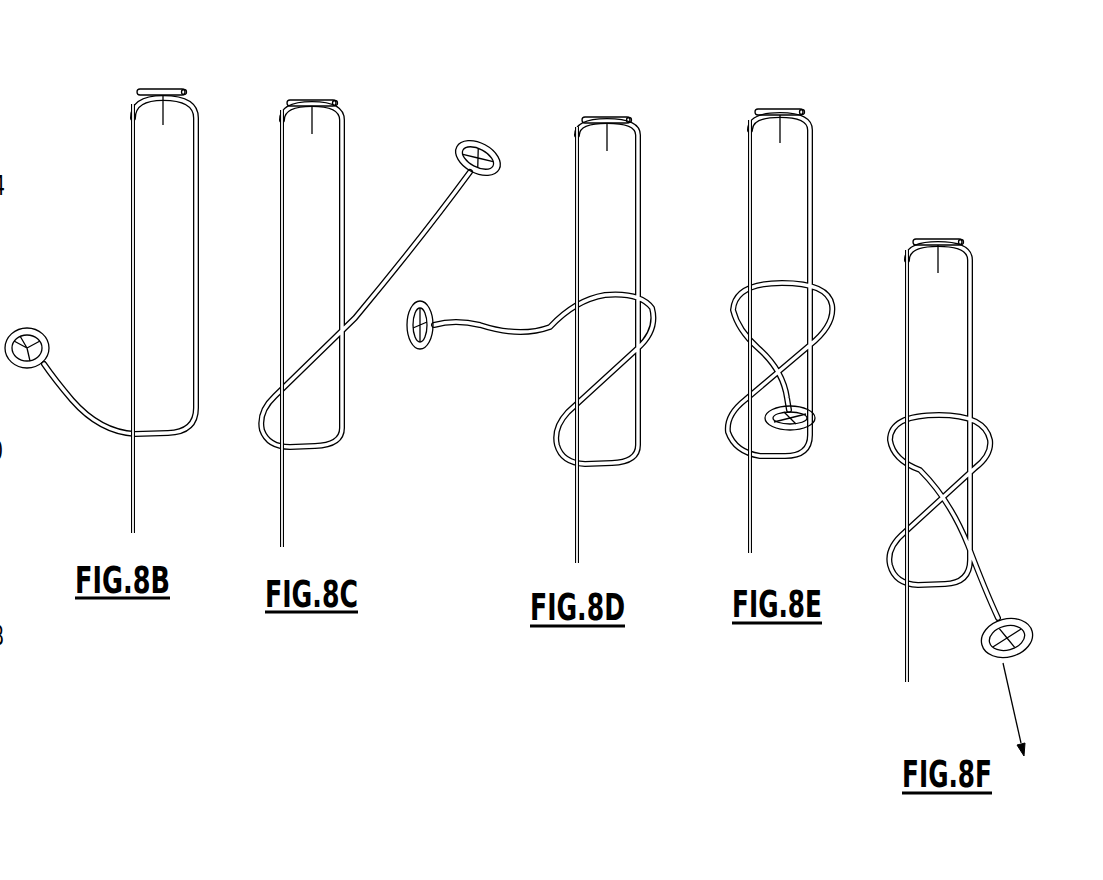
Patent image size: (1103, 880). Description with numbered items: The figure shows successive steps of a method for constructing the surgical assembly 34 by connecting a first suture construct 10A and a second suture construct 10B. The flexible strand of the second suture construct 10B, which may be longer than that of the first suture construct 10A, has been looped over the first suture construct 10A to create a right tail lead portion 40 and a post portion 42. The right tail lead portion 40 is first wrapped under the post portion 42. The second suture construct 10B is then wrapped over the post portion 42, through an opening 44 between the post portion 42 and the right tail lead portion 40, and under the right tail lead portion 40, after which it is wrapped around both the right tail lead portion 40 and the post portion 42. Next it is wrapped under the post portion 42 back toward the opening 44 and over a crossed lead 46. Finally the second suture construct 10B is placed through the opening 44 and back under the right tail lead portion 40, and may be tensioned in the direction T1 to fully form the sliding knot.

In FIG. 8B, the first suture construct 10A is at (171, 78).
In FIG. 8C, the first suture construct 10A is at (320, 90).
In FIG. 8D, the first suture construct 10A is at (617, 106).
In FIG. 8E, the first suture construct 10A is at (790, 96).
In FIG. 8F, the first suture construct 10A is at (949, 225).
In FIG. 8B, the second suture construct 10B is at (44, 310).
In FIG. 8C, the second suture construct 10B is at (486, 126).
In FIG. 8D, the second suture construct 10B is at (431, 372).
In FIG. 8E, the second suture construct 10B is at (794, 448).
In FIG. 8F, the second suture construct 10B is at (1024, 672).
In FIG. 8F, the surgical assembly 34 is at (1004, 282).
In FIG. 8B, the right tail lead portion 40 is at (198, 314).
In FIG. 8C, the right tail lead portion 40 is at (345, 248).
In FIG. 8D, the right tail lead portion 40 is at (641, 265).
In FIG. 8E, the right tail lead portion 40 is at (813, 257).
In FIG. 8F, the right tail lead portion 40 is at (973, 384).
In FIG. 8B, the post portion 42 is at (131, 354).
In FIG. 8C, the post portion 42 is at (281, 365).
In FIG. 8D, the post portion 42 is at (575, 380).
In FIG. 8E, the post portion 42 is at (748, 371).
In FIG. 8F, the post portion 42 is at (905, 372).
In FIG. 8C, the opening 44 is at (315, 385).
In FIG. 8E, the opening 44 is at (750, 438).
In FIG. 8F, the opening 44 is at (920, 556).
In FIG. 8E, the crossed lead 46 is at (793, 352).
In FIG. 8F, the crossed lead 46 is at (953, 480).
In FIG. 8F, the direction of tensioning T1 is at (1009, 702).